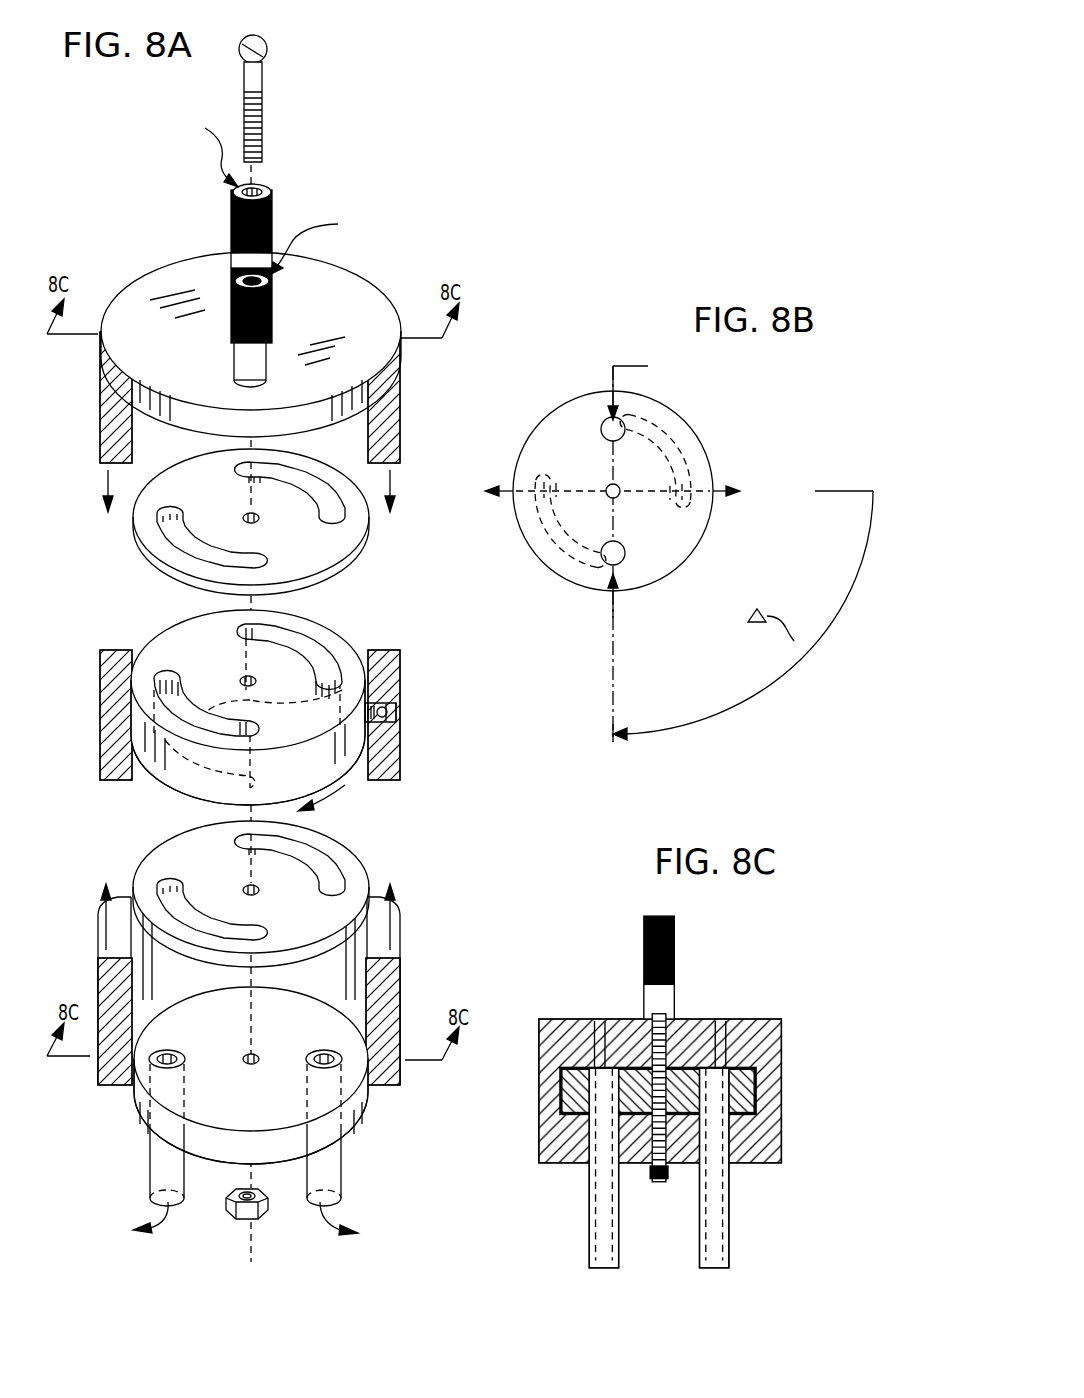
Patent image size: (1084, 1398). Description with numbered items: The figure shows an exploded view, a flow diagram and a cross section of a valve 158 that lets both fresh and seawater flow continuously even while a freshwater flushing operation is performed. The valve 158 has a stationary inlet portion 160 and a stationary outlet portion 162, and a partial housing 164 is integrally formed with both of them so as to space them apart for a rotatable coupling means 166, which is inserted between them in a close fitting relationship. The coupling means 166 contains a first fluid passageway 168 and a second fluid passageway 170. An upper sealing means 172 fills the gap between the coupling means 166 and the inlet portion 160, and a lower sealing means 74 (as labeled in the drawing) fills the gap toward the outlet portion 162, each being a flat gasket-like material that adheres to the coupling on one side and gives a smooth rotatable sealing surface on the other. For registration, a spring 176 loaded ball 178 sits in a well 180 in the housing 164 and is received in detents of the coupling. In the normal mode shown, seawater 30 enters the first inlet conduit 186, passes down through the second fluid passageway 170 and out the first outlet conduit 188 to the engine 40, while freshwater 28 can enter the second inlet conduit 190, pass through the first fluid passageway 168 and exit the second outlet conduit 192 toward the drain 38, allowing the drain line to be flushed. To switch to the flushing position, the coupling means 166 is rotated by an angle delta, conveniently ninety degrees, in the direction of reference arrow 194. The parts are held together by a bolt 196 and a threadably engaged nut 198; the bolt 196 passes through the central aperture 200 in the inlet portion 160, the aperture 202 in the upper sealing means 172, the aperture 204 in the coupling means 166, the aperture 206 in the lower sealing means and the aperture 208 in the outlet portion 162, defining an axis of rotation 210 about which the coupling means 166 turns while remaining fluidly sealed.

In FIG. 8A, the bolt 196 is at (262, 75).
In FIG. 8C, the bolt 196 is at (646, 1008).
In FIG. 8A, the seawater 30 is at (222, 158).
In FIG. 8B, the seawater 30 is at (726, 380).
In FIG. 8A, the first inlet conduit 186 is at (274, 196).
In FIG. 8A, the freshwater 28 is at (285, 245).
In FIG. 8B, the freshwater 28 is at (648, 658).
In FIG. 8A, the valve 158 is at (372, 185).
In FIG. 8C, the valve 158 is at (743, 965).
In FIG. 8A, the stationary inlet portion 160 is at (352, 306).
In FIG. 8A, the aperture 200 is at (272, 330).
In FIG. 8A, the second inlet conduit 190 is at (234, 361).
In FIG. 8C, the second inlet conduit 190 is at (668, 984).
In FIG. 8A, the axis of rotation 210 is at (251, 498).
In FIG. 8A, the aperture 202 is at (259, 520).
In FIG. 8A, the upper sealing means 172 is at (272, 522).
In FIG. 8A, the second fluid passageway 170 is at (216, 628).
In FIG. 8B, the second fluid passageway 170 is at (690, 460).
In FIG. 8C, the second fluid passageway 170 is at (710, 1012).
In FIG. 8A, the coupling means 166 is at (247, 698).
In FIG. 8B, the coupling means 166 is at (551, 416).
In FIG. 8C, the coupling means 166 is at (561, 1082).
In FIG. 8A, the first fluid passageway 168 is at (160, 668).
In FIG. 8B, the first fluid passageway 168 is at (553, 541).
In FIG. 8C, the first fluid passageway 168 is at (596, 1012).
In FIG. 8A, the aperture 204 is at (240, 678).
In FIG. 8A, the ball 178 is at (386, 706).
In FIG. 8A, the spring 176 is at (388, 712).
In FIG. 8A, the well 180 is at (392, 722).
In FIG. 8A, the reference arrow 194 is at (332, 789).
In FIG. 8B, the reference arrow 194 is at (743, 694).
In FIG. 8A, the lower seal plate 74 is at (275, 894).
In FIG. 8A, the aperture 206 is at (259, 893).
In FIG. 8A, the partial housing 164 is at (403, 963).
In FIG. 8C, the partial housing 164 is at (770, 1071).
In FIG. 8A, the aperture 208 is at (256, 1056).
In FIG. 8A, the stationary outlet portion 162 is at (275, 1075).
In FIG. 8A, the second outlet conduit 192 is at (152, 1177).
In FIG. 8C, the second outlet conduit 192 is at (585, 1208).
In FIG. 8A, the first outlet conduit 188 is at (340, 1177).
In FIG. 8C, the first outlet conduit 188 is at (719, 1218).
In FIG. 8A, the drain outlet 38 is at (106, 1220).
In FIG. 8B, the drain outlet 38 is at (442, 483).
In FIG. 8A, the engine 40 is at (392, 1225).
In FIG. 8B, the engine 40 is at (789, 505).
In FIG. 8A, the nut 198 is at (252, 1222).
In FIG. 8C, the nut 198 is at (655, 1165).